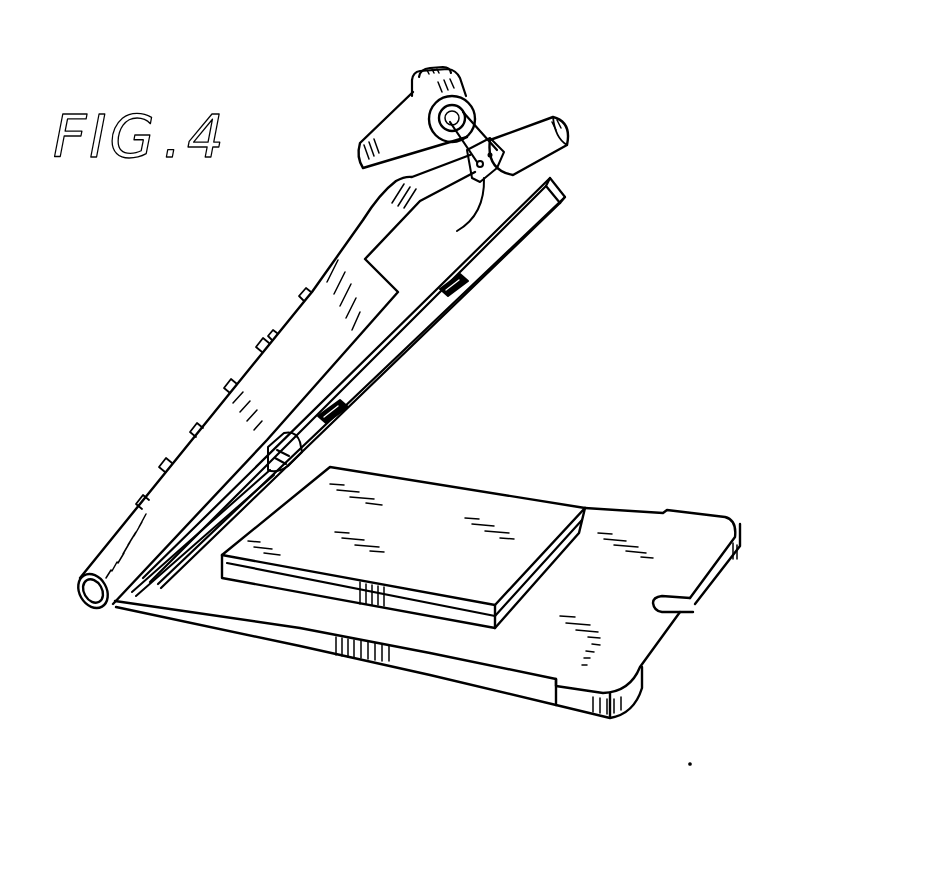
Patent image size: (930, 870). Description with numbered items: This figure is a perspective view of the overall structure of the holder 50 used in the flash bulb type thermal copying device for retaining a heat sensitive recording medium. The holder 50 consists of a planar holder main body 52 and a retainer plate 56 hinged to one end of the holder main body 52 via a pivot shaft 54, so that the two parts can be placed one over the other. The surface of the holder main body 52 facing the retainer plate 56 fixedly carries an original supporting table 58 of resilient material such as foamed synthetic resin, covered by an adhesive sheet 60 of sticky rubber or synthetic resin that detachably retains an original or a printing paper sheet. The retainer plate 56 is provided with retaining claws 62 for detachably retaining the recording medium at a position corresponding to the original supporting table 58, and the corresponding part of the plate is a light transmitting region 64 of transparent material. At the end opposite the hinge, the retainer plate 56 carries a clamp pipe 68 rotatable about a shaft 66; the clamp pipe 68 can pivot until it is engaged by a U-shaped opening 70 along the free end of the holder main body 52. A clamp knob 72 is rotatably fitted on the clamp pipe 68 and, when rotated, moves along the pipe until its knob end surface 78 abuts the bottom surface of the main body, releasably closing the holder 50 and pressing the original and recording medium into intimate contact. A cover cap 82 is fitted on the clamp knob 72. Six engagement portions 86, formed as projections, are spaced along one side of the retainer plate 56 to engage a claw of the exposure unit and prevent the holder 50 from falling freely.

The holder 50 is at (611, 118).
The holder main body 52 is at (636, 520).
The pivot shaft 54 is at (197, 522).
The retainer plate 56 is at (368, 228).
The original supporting table 58 is at (545, 565).
The adhesive sheet 60 is at (500, 503).
The retaining claws 62 is at (470, 290).
The light transmitting region 64 is at (388, 320).
The shaft 66 is at (571, 142).
The clamp pipe 68 is at (400, 283).
The U-shaped opening 70 is at (678, 612).
The clamp knob 72 is at (490, 88).
The knob end surface 78 is at (482, 102).
The cover cap 82 is at (447, 66).
The engagement portions 86 is at (310, 298).